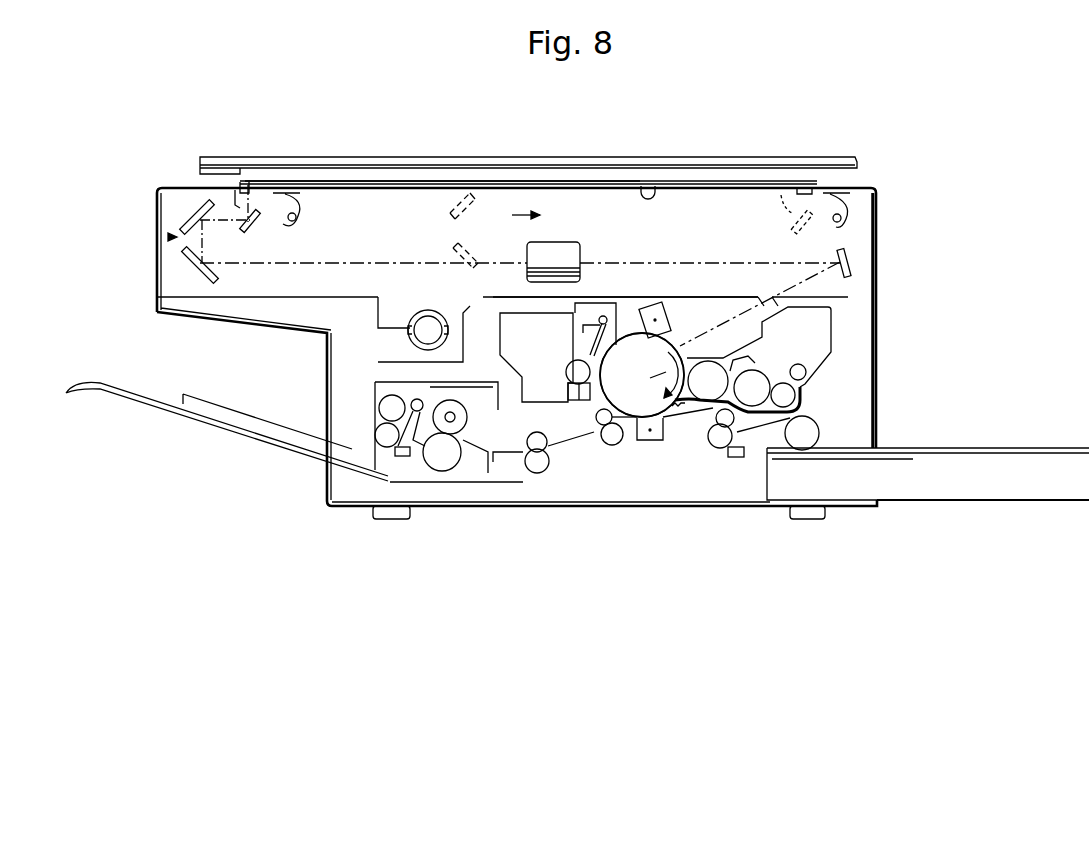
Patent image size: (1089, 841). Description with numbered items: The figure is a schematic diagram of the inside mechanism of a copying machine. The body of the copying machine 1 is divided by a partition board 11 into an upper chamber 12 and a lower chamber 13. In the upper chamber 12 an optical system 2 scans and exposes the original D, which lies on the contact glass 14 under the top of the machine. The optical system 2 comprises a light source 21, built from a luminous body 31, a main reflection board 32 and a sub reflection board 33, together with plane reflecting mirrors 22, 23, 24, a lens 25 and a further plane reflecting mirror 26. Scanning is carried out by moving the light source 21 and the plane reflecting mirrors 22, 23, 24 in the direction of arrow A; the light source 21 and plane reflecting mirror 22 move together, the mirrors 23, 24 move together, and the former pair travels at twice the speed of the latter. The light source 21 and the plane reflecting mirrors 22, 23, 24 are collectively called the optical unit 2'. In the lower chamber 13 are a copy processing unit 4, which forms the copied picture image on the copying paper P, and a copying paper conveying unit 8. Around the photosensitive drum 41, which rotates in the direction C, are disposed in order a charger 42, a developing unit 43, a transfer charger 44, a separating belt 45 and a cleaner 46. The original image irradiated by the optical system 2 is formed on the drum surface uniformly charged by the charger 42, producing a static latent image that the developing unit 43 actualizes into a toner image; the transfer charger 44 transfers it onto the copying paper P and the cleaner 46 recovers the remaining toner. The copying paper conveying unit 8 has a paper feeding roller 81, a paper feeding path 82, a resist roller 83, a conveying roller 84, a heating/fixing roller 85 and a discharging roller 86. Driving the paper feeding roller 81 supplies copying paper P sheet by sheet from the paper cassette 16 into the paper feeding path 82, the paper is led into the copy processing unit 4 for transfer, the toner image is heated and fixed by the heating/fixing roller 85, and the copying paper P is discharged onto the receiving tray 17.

The body of the copying machine 1 is at (905, 188).
The optical system 2 is at (455, 190).
The optical unit 2' is at (130, 249).
The copy processing unit 4 is at (643, 448).
The copying paper conveying unit 8 is at (716, 458).
The partition board 11 is at (848, 298).
The upper chamber 12 is at (860, 236).
The lower chamber 13 is at (853, 359).
The contact glass 14 is at (657, 190).
The paper cassette 16 is at (988, 480).
The receiving tray 17 is at (198, 410).
The light source 21 is at (313, 222).
The plane reflecting mirror 22 is at (253, 224).
The plane reflecting mirror 23 is at (193, 217).
The plane reflecting mirror 24 is at (187, 260).
The lens 25 is at (565, 252).
The plane reflecting mirror 26 is at (836, 258).
The luminous body 31 is at (297, 213).
The main reflection board 32 is at (257, 212).
The sub reflection board 33 is at (233, 202).
The photosensitive drum 41 is at (607, 388).
The charger 42 is at (658, 312).
The developing unit 43 is at (705, 388).
The transfer charger 44 is at (660, 442).
The separating belt 45 is at (623, 447).
The cleaner 46 is at (590, 346).
The paper feeding roller 81 is at (805, 430).
The paper feeding path 82 is at (760, 436).
The resist roller 83 is at (718, 441).
The conveying roller 84 is at (540, 473).
The heating/fixing roller 85 is at (442, 471).
The discharging roller 86 is at (383, 397).
The arrow A is at (512, 215).
The rotation direction C is at (642, 375).
The original D is at (600, 185).
The copying paper P is at (900, 480).